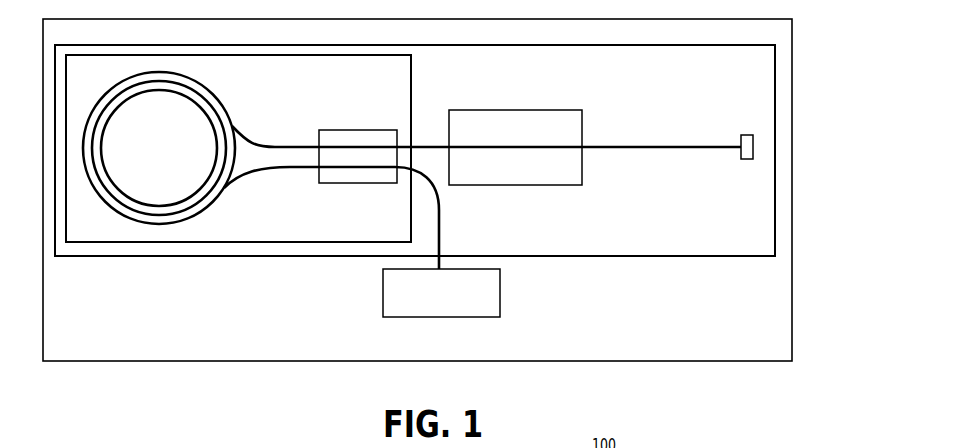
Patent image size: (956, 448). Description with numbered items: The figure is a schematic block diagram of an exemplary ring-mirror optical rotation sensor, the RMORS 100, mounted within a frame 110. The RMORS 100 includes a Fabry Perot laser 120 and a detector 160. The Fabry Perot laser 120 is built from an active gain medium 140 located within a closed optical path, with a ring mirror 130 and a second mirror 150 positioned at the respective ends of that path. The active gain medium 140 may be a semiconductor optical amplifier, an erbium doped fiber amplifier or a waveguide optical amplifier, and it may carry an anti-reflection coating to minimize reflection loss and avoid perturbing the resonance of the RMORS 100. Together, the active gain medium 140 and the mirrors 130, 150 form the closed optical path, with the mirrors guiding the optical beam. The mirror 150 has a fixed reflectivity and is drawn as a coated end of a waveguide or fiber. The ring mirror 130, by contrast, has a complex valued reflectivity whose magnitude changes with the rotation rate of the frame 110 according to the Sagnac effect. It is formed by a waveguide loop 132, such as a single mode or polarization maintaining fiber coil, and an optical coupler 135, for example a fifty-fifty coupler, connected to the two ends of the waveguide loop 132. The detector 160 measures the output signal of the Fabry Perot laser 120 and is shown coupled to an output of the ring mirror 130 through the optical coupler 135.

The RMORS 100 is at (417, 221).
The frame 110 is at (642, 361).
The Fabry Perot laser 120 is at (203, 257).
The ring mirror 130 is at (411, 83).
The waveguide loop 132 is at (198, 82).
The optical coupler 135 is at (343, 130).
The active gain medium 140 is at (508, 110).
The mirror 150 is at (748, 162).
The detector 160 is at (503, 305).